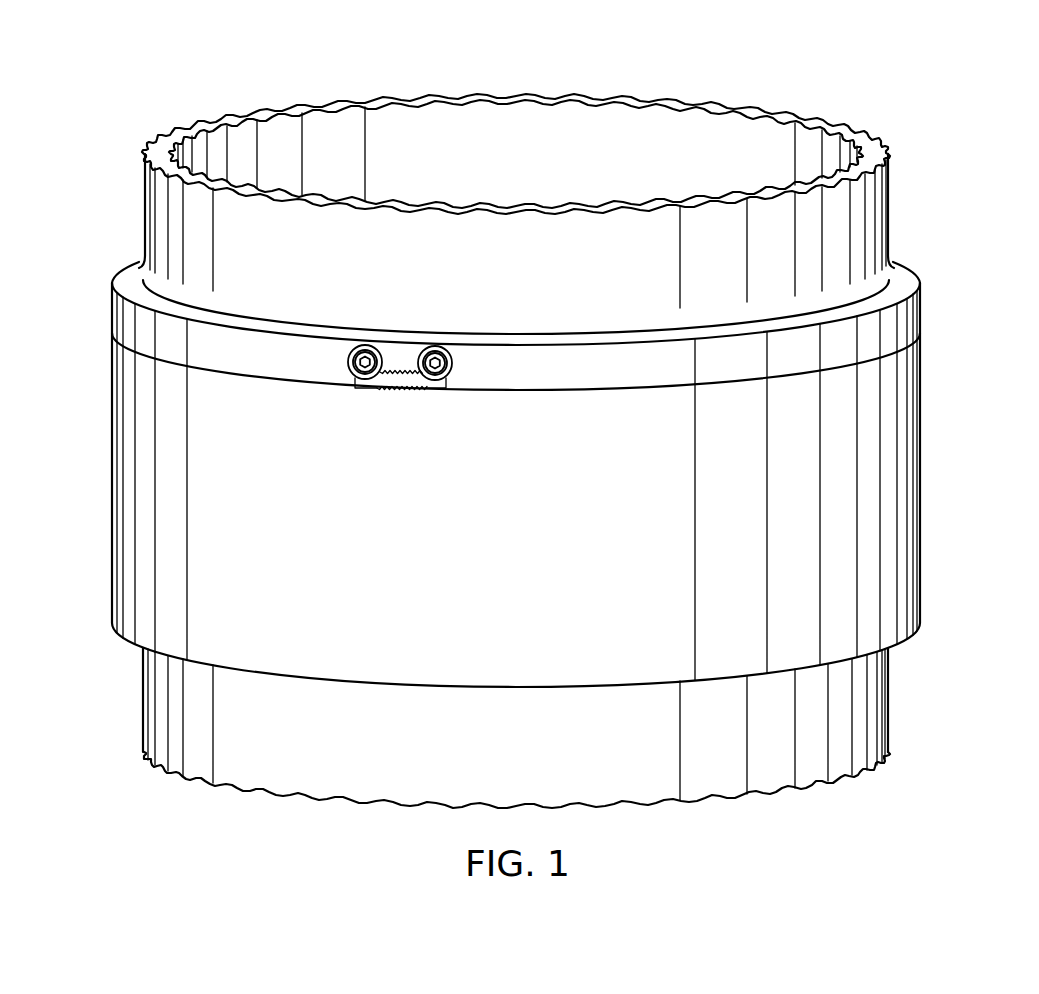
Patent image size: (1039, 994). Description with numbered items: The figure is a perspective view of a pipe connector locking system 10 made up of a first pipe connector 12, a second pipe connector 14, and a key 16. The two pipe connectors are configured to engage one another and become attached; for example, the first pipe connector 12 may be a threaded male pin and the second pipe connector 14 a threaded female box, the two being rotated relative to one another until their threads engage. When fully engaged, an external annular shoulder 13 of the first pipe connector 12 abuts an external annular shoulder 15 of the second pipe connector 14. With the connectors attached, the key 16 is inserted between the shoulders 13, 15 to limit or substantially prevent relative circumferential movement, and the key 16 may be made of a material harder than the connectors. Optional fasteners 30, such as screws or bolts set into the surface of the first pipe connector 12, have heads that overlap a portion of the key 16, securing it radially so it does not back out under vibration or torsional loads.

The pipe connector locking system 10 is at (890, 95).
The first pipe connector 12 is at (923, 310).
The external annular shoulder 13 is at (258, 377).
The second pipe connector 14 is at (930, 462).
The external annular shoulder 15 is at (237, 372).
The key 16 is at (405, 393).
The fasteners 30 is at (370, 353).